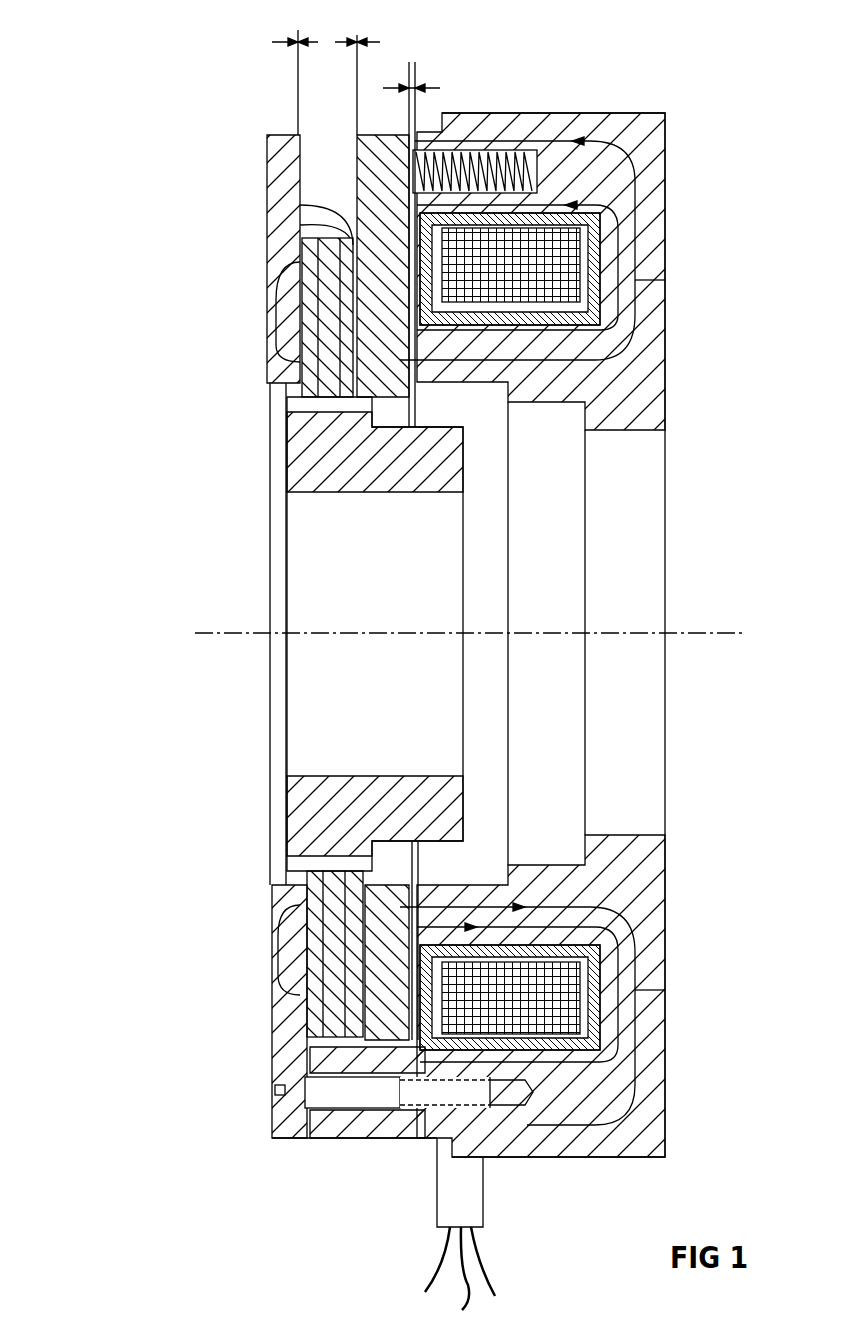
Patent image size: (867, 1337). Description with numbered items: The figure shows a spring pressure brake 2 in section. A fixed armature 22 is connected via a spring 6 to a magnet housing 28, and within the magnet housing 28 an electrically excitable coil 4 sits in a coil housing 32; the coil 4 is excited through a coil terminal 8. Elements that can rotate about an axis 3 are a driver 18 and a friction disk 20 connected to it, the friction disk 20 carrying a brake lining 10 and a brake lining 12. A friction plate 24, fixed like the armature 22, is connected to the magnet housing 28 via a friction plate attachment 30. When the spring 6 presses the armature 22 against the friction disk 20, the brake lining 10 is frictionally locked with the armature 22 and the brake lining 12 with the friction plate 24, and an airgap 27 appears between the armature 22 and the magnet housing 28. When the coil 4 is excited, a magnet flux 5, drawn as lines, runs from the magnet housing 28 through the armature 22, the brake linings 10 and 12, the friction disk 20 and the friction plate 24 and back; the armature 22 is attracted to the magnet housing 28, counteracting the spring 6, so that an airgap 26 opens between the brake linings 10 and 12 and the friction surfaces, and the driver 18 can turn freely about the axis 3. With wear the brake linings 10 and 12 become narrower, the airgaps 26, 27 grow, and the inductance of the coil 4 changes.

The spring pressure brake 2 is at (135, 94).
The axis 3 is at (698, 633).
The coil 4 is at (600, 262).
The magnet flux 5 is at (635, 305).
The spring 6 is at (508, 150).
The coil terminal 8 is at (462, 1200).
The brake lining 10 is at (300, 205).
The brake lining 12 is at (300, 225).
The driver 18 is at (330, 448).
The friction disk 20 is at (330, 298).
The armature 22 is at (370, 140).
The friction plate 24 is at (300, 155).
The airgap 26 is at (298, 40).
The airgap 27 is at (419, 62).
The magnet housing 28 is at (637, 141).
The friction plate attachment 30 is at (290, 1112).
The coil housing 32 is at (600, 970).